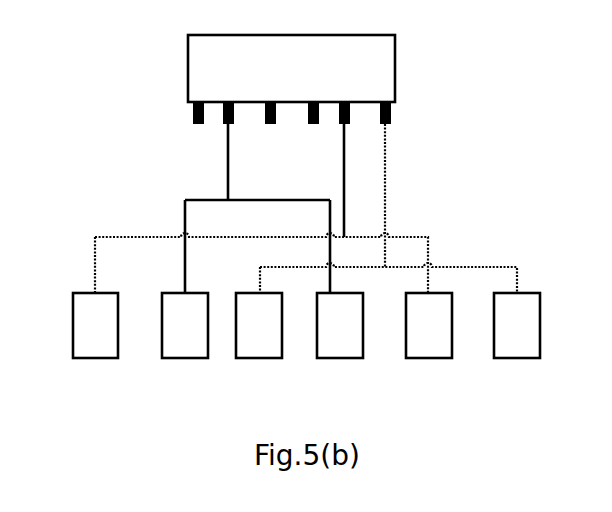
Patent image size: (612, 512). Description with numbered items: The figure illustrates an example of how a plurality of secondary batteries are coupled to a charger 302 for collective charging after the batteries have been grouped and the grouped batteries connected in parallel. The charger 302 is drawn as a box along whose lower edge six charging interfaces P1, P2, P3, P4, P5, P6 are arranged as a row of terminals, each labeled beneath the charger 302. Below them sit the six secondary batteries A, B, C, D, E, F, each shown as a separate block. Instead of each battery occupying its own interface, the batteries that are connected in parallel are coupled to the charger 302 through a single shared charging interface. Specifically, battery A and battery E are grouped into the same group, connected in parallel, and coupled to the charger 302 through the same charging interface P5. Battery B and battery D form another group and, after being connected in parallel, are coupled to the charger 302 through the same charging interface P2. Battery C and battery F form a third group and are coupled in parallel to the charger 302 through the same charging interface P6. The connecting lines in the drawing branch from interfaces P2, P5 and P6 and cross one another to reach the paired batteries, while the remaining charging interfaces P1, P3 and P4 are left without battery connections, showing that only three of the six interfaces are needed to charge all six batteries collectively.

The charger 302 is at (395, 63).
The charging interface P1 is at (188, 125).
The charging interface P2 is at (219, 125).
The charging interface P3 is at (259, 125).
The charging interface P4 is at (302, 125).
The charging interface P5 is at (334, 125).
The charging interface P6 is at (374, 125).
The secondary battery A is at (95, 325).
The secondary battery B is at (185, 325).
The secondary battery C is at (259, 325).
The secondary battery D is at (340, 325).
The secondary battery E is at (429, 325).
The secondary battery F is at (517, 325).